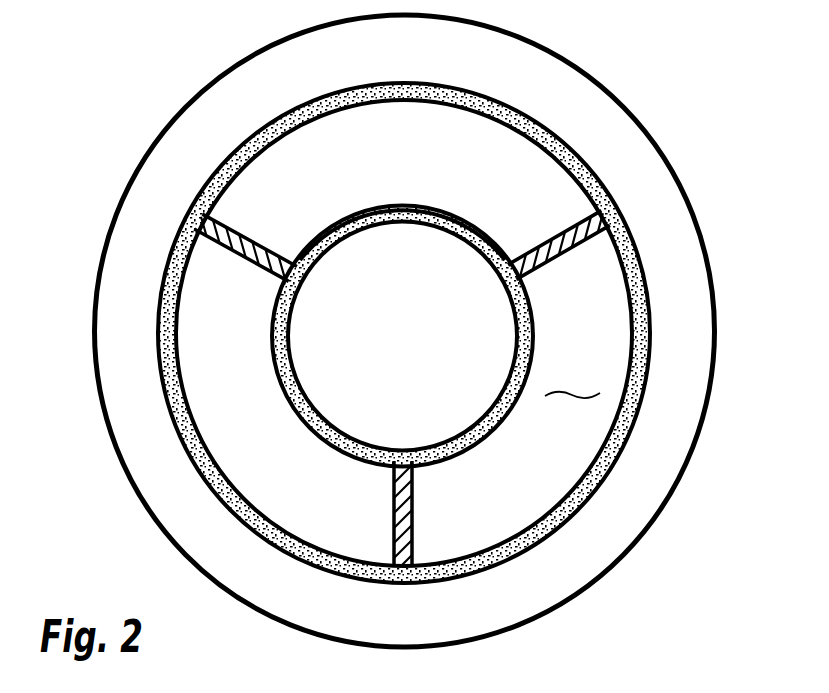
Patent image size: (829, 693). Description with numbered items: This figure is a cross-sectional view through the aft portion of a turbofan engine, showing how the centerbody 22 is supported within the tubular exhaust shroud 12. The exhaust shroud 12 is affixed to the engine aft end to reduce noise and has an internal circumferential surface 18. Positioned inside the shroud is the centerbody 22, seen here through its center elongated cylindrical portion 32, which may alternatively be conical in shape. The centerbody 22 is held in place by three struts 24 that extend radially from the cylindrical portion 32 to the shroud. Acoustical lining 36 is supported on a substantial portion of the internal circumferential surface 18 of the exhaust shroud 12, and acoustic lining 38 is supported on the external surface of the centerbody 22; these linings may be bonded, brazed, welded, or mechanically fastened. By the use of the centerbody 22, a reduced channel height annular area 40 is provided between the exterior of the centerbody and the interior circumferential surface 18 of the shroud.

The exhaust shroud 12 is at (623, 148).
The internal circumferential surface 18 is at (524, 138).
The centerbody 22 is at (402, 356).
The struts 24 is at (248, 248).
The center elongated cylindrical portion 32 is at (470, 233).
The acoustical lining 36 is at (318, 117).
The acoustic lining 38 is at (424, 201).
The reduced channel height annular area 40 is at (572, 380).